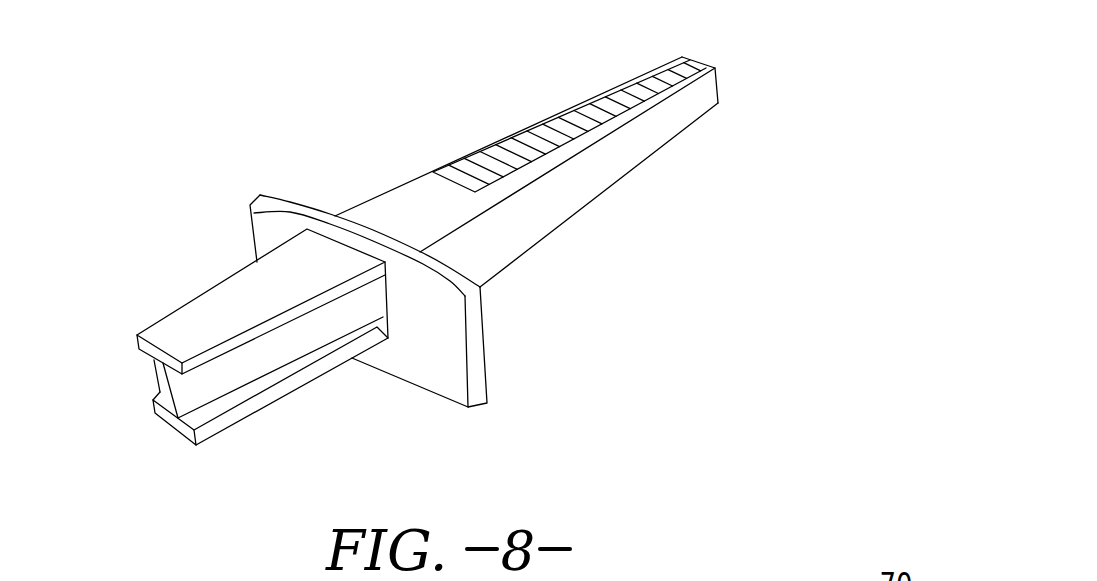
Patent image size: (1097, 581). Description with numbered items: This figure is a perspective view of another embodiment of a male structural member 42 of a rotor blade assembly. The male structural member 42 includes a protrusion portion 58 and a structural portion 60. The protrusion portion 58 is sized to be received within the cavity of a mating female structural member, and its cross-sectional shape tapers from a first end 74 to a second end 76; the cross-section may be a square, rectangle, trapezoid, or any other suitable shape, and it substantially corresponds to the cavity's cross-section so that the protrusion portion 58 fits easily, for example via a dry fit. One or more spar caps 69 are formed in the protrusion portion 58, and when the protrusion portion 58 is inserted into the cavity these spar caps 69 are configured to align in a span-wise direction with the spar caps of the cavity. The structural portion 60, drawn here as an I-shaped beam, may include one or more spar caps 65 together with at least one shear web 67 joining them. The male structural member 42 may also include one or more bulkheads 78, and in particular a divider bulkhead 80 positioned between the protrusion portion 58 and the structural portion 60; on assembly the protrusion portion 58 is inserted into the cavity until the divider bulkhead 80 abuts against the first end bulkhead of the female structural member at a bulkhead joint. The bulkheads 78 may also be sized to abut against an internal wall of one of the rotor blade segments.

The male structural member 42 is at (241, 94).
The protrusion portion 58 is at (469, 152).
The structural portion 60 is at (227, 281).
The spar caps 65 is at (176, 330).
The shear web 67 is at (238, 363).
The spar caps 69 is at (569, 121).
The first end 74 is at (387, 203).
The second end 76 is at (721, 78).
The bulkheads 78 is at (418, 347).
The divider bulkhead 80 is at (448, 373).